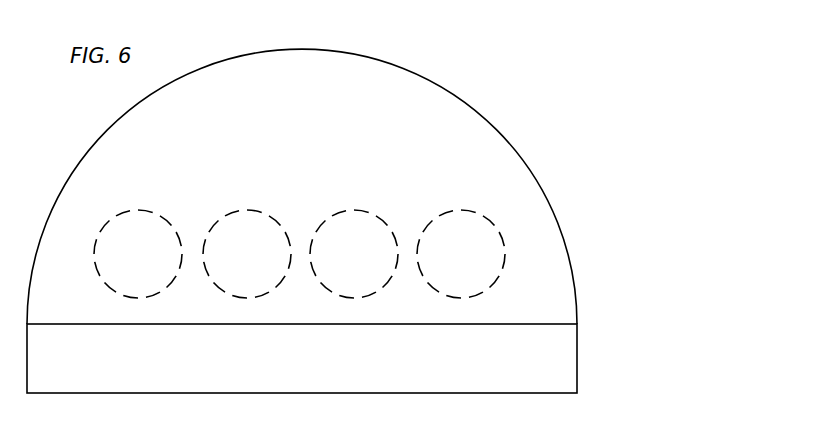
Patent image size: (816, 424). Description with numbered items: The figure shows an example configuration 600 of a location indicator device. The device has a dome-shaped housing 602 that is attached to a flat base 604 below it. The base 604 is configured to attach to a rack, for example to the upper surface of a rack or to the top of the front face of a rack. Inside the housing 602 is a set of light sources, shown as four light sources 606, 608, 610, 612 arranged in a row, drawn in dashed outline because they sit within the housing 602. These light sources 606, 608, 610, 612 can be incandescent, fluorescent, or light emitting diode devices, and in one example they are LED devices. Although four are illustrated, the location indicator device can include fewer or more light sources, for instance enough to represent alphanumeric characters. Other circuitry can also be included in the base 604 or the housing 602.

The configuration 600 is at (538, 70).
The housing 602 is at (533, 172).
The base 604 is at (577, 358).
The light source 606 is at (504, 245).
The light source 608 is at (364, 211).
The light source 610 is at (251, 211).
The light source 612 is at (139, 211).